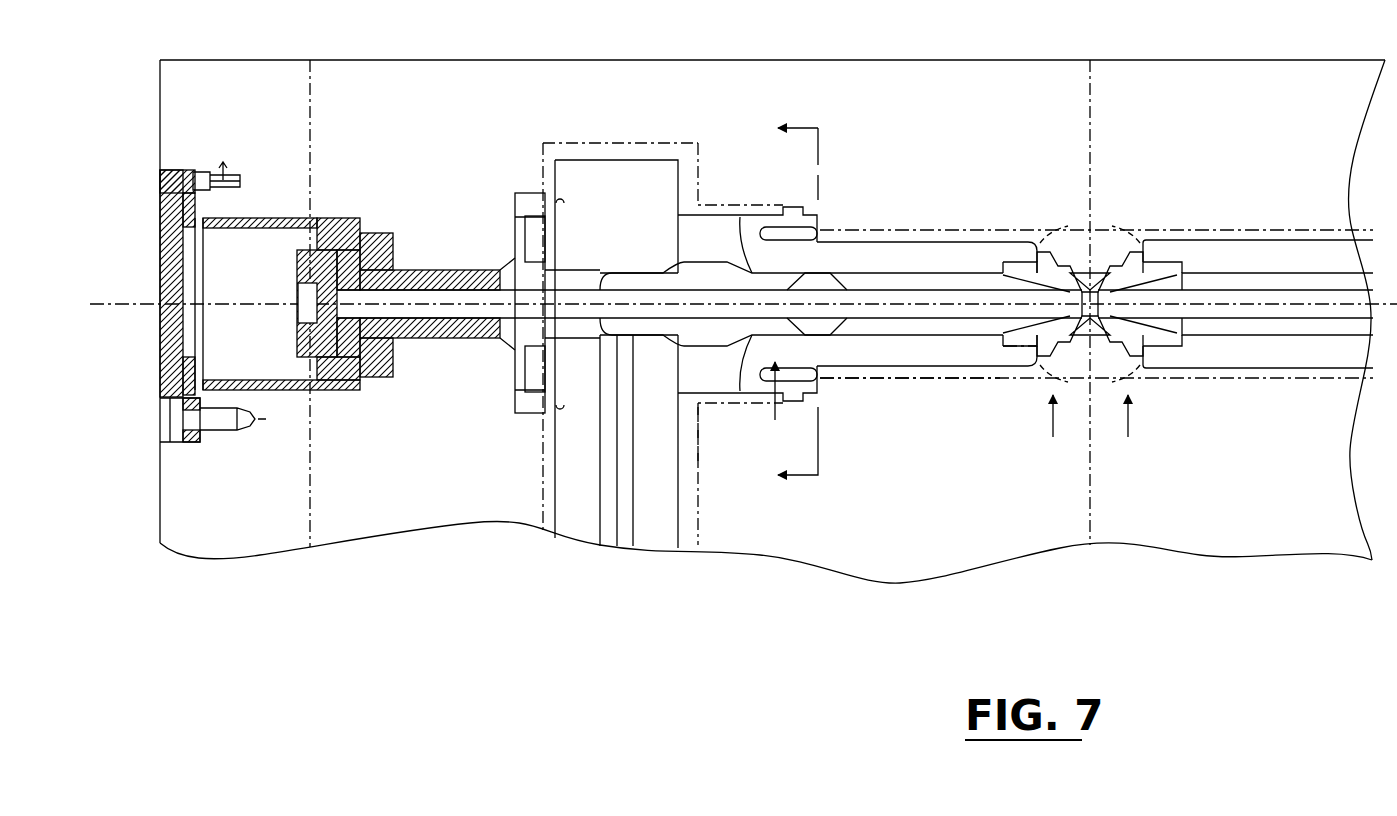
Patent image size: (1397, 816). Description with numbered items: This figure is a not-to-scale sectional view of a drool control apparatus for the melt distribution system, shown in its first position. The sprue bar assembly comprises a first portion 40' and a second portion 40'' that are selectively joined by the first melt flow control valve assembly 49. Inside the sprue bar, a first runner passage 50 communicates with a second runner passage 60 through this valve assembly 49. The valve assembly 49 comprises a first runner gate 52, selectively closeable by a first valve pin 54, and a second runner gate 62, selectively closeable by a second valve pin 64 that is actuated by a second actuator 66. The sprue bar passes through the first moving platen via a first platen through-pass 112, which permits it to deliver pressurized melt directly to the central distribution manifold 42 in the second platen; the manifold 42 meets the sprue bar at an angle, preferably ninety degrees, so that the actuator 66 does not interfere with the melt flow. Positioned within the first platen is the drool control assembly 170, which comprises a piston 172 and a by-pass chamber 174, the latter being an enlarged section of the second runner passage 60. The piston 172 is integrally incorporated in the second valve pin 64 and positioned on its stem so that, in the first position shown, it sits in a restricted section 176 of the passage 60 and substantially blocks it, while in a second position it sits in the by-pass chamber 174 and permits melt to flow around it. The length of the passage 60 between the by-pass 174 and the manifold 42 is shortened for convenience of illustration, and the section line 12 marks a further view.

The section line 12- 12 is at (790, 301).
The first portion of sprue bar assembly 40' is at (1258, 230).
The second portion of sprue bar assembly 40'' is at (927, 252).
The central distribution manifold 42 is at (555, 540).
The first melt flow control valve assembly 49 is at (1110, 220).
The first runner passage 50 is at (1285, 230).
The first runner gate 52 is at (1112, 375).
The first valve pin 54 is at (1260, 320).
The second runner passage 60 is at (985, 378).
The second runner gate 62 is at (1070, 375).
The second valve pin 64 is at (847, 336).
The second actuator 66 is at (420, 270).
The first platen through-pass 112 is at (1000, 228).
The drool control assembly 170 is at (788, 409).
The piston 172 is at (820, 273).
The by-pass chamber 174 is at (706, 402).
The restricted section 176 is at (746, 215).